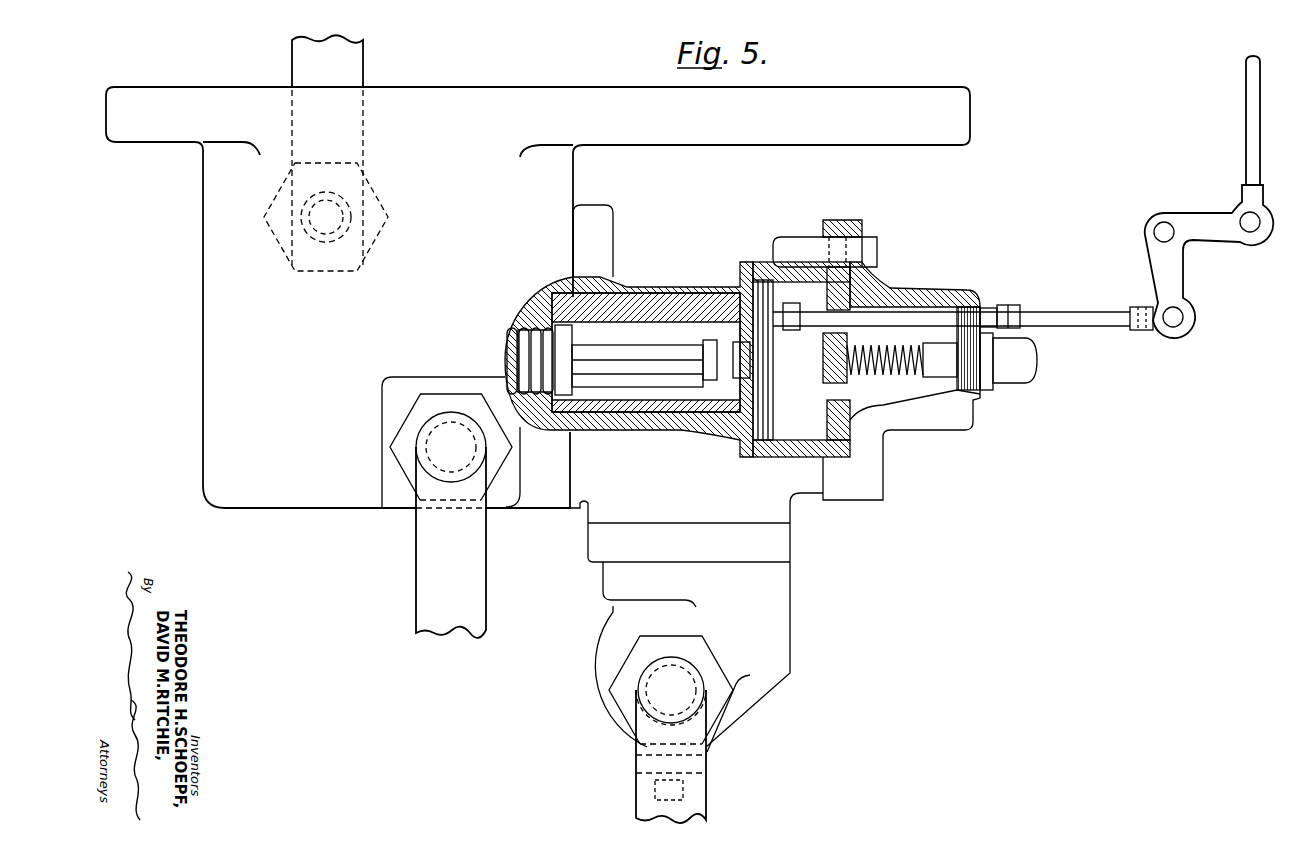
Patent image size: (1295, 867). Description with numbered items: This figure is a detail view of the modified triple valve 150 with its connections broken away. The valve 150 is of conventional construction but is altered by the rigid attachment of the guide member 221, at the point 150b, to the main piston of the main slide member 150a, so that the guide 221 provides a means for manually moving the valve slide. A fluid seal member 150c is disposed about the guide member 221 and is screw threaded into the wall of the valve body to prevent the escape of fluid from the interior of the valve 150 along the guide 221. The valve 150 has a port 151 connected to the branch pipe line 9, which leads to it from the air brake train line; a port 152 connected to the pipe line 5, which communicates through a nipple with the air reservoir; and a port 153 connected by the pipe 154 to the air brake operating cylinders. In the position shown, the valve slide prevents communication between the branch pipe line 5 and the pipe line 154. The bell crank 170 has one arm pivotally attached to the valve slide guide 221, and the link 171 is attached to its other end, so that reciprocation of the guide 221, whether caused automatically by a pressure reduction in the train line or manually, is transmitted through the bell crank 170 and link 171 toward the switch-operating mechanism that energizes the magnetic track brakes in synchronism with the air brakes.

The branch pipe line 5 is at (295, 58).
The branch pipe line 9 is at (643, 803).
The triple valve 150 is at (210, 207).
The main slide member 150a is at (632, 375).
The attachment point of guide member 150b is at (818, 354).
The fluid seal member 150c is at (1028, 282).
The port 151 is at (697, 676).
The port 152 is at (281, 246).
The port 153 is at (451, 420).
The pipe 154 is at (420, 590).
The bell crank 170 is at (1173, 270).
The link 171 is at (1247, 121).
The guide member 221 is at (1100, 299).